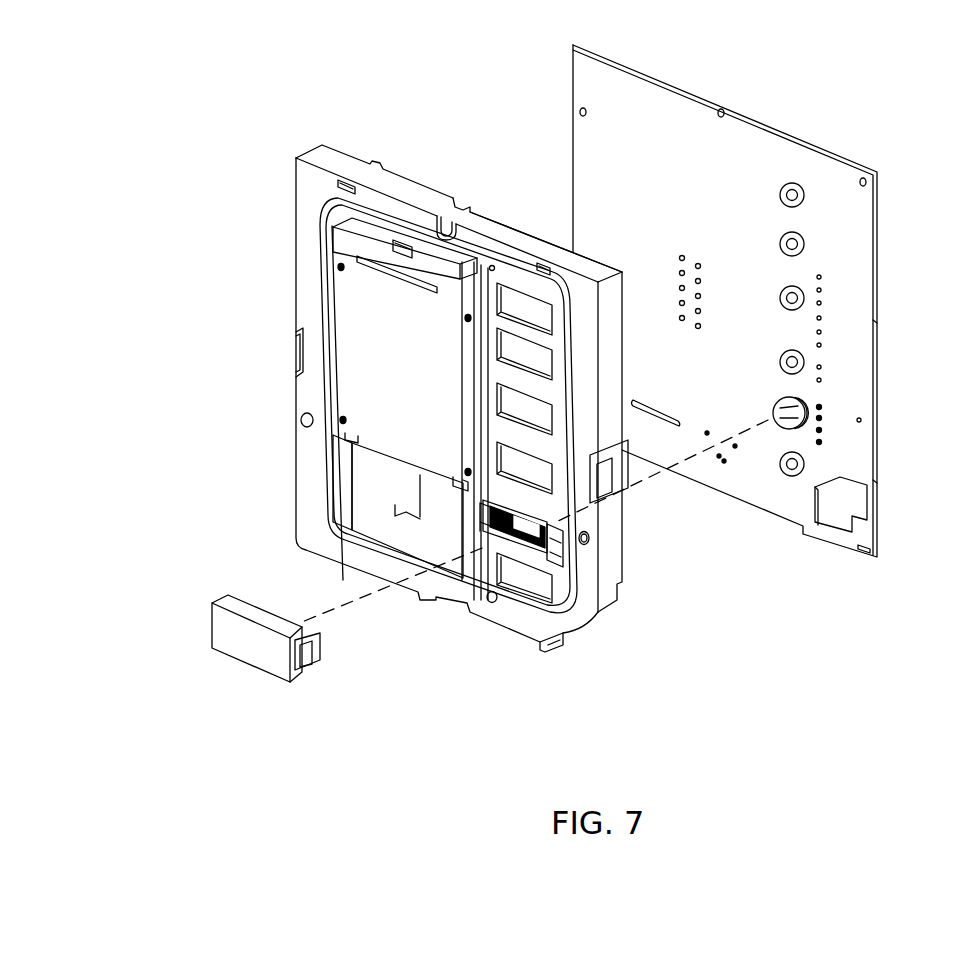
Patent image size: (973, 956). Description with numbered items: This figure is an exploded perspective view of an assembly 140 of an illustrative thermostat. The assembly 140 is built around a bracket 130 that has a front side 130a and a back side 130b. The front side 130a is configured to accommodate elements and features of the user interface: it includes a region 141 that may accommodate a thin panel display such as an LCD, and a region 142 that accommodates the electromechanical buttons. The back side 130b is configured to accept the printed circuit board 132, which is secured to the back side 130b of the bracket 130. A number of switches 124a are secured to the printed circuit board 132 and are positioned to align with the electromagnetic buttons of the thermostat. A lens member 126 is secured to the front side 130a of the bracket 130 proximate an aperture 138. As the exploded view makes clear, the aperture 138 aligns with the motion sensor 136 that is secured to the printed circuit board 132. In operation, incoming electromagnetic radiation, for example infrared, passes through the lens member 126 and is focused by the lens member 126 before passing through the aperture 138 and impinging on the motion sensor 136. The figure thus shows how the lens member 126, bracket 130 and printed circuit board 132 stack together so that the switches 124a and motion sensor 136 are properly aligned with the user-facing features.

The assembly 140 is at (234, 106).
The bracket 130 is at (319, 152).
The front side 130a is at (277, 197).
The back side 130b is at (417, 171).
The region 141 is at (360, 303).
The region 142 is at (498, 218).
The aperture 138 is at (519, 560).
The lens member 126 is at (250, 662).
The printed circuit board 132 is at (663, 83).
The switches 124a is at (812, 464).
The motion sensor 136 is at (808, 416).